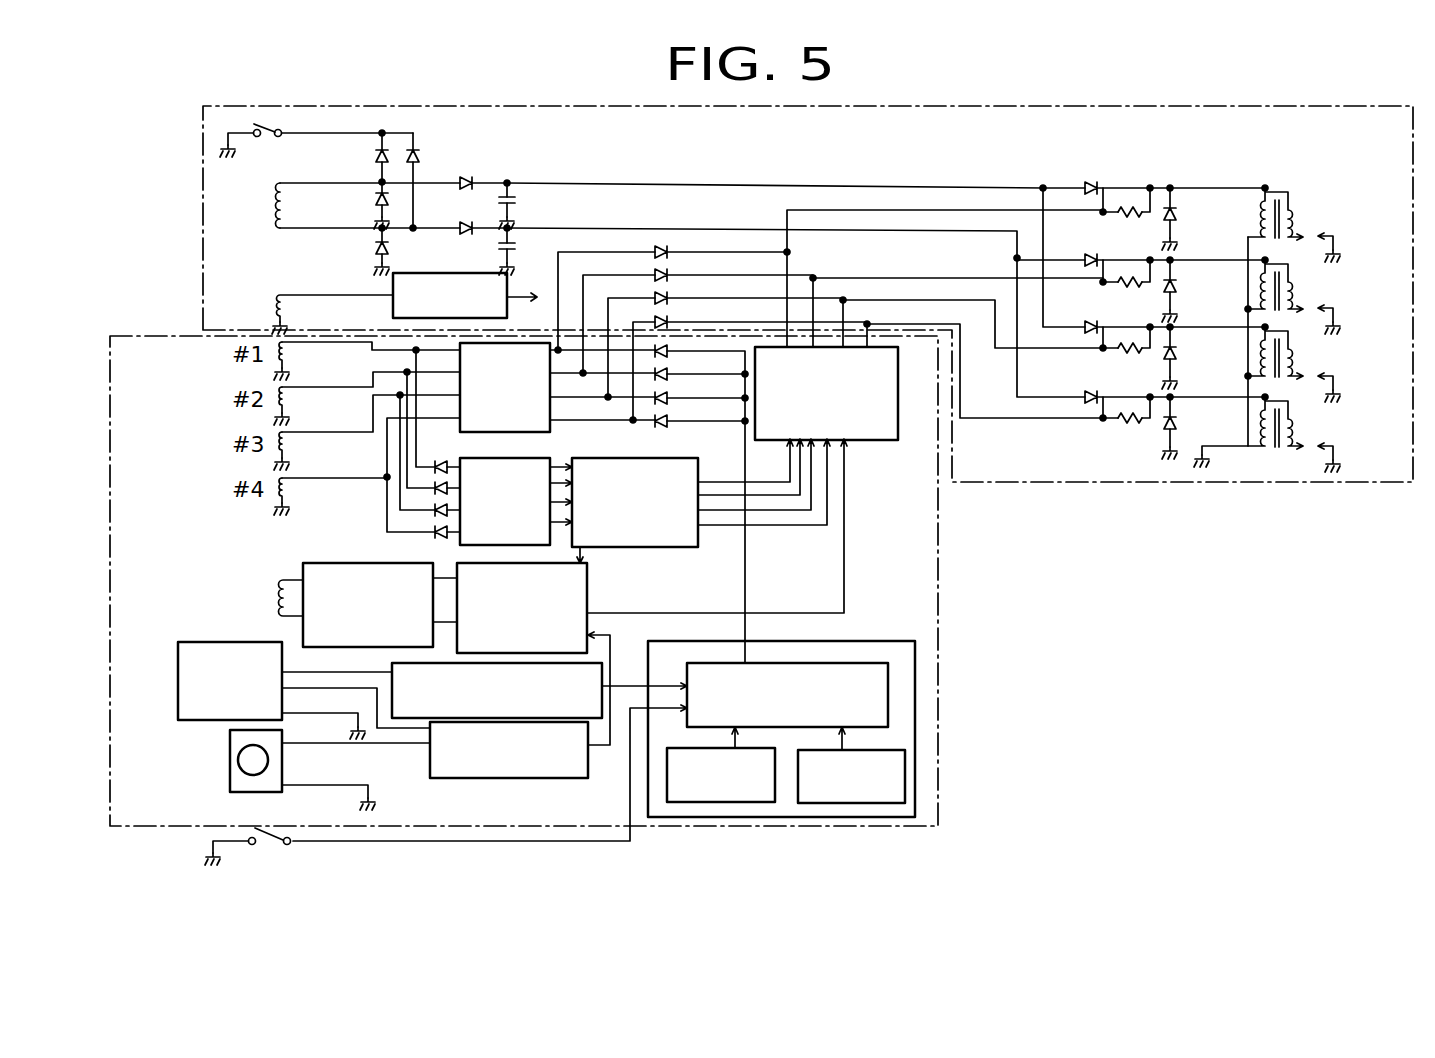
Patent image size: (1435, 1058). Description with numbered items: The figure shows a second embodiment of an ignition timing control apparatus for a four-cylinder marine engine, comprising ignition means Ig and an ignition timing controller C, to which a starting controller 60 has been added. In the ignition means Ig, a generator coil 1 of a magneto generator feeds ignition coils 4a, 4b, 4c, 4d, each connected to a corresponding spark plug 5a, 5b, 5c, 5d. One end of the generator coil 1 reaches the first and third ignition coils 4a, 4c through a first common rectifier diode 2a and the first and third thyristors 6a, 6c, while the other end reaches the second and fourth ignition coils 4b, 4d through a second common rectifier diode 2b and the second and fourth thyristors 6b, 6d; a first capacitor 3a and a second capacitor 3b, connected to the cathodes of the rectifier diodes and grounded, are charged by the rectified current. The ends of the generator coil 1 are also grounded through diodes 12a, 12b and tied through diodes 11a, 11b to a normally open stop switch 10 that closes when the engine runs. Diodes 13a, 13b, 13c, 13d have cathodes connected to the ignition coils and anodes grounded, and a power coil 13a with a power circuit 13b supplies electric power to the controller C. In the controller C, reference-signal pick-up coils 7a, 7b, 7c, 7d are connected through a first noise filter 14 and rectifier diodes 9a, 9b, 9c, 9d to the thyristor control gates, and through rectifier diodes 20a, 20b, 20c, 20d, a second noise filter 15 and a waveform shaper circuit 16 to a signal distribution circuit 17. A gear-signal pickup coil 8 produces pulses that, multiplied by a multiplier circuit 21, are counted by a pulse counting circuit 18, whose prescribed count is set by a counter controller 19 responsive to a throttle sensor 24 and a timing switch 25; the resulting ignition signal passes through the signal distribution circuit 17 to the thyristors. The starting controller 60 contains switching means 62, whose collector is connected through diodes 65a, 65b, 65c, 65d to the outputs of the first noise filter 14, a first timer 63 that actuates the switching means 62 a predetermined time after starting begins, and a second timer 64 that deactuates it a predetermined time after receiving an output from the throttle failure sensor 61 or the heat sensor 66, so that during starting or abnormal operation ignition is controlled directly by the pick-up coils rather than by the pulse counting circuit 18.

The ignition means Ig is at (1040, 106).
The ignition timing controller C is at (940, 703).
The generator coil 1 is at (275, 207).
The first common rectifier diode 2a is at (472, 178).
The second common rectifier diode 2b is at (462, 225).
The first capacitor 3a is at (516, 200).
The second capacitor 3b is at (516, 246).
The first ignition coil 4a is at (1293, 205).
The second ignition coil 4b is at (1293, 277).
The third ignition coil 4c is at (1293, 345).
The fourth ignition coil 4d is at (1293, 413).
The spark plug 5a is at (1340, 236).
The spark plug 5b is at (1340, 307).
The spark plug 5c is at (1340, 376).
The spark plug 5d is at (1340, 446).
The first thyristor 6a is at (1082, 183).
The second thyristor 6b is at (1084, 256).
The third thyristor 6c is at (1084, 323).
The fourth thyristor 6d is at (1084, 393).
The first signal generator pick-up coil 7a is at (290, 352).
The first signal generator pick-up coil 7b is at (290, 397).
The first signal generator pick-up coil 7c is at (290, 442).
The first signal generator pick-up coil 7d is at (290, 488).
The second signal generator 8 is at (280, 600).
The rectifier diode 9a is at (670, 249).
The rectifier diode 9b is at (670, 272).
The rectifier diode 9c is at (670, 295).
The rectifier diode 9d is at (670, 319).
The stop switch 10 is at (262, 146).
The diode 11a is at (376, 157).
The diode 11b is at (420, 154).
The diode 12a is at (376, 202).
The diode 12b is at (376, 249).
The first diode / power coil 13a is at (278, 300).
The second diode / power circuit 13b is at (415, 274).
The third diode 13c is at (1176, 354).
The fourth diode 13d is at (1176, 424).
The first noise filter 14 is at (508, 340).
The second noise filter 15 is at (520, 456).
The waveform shaper circuit 16 is at (663, 458).
The signal distribution circuit 17 is at (862, 442).
The pulse counting circuit 18 is at (590, 588).
The counter controller 19 is at (500, 780).
The rectifier diode 20a is at (442, 461).
The rectifier diode 20b is at (438, 482).
The rectifier diode 20c is at (433, 511).
The rectifier diode 20d is at (435, 534).
The multiplier circuit 21 is at (338, 560).
The throttle sensor 24 is at (178, 663).
The timing switch 25 is at (230, 760).
The starting controller 60 is at (875, 641).
The first failure sensor 61 is at (600, 662).
The switching means 62 is at (888, 703).
The first timer 63 is at (717, 803).
The second timer 64 is at (857, 805).
The diode 65a is at (668, 357).
The diode 65b is at (668, 380).
The diode 65c is at (668, 404).
The diode 65d is at (668, 427).
The second failure sensor 66 is at (266, 845).